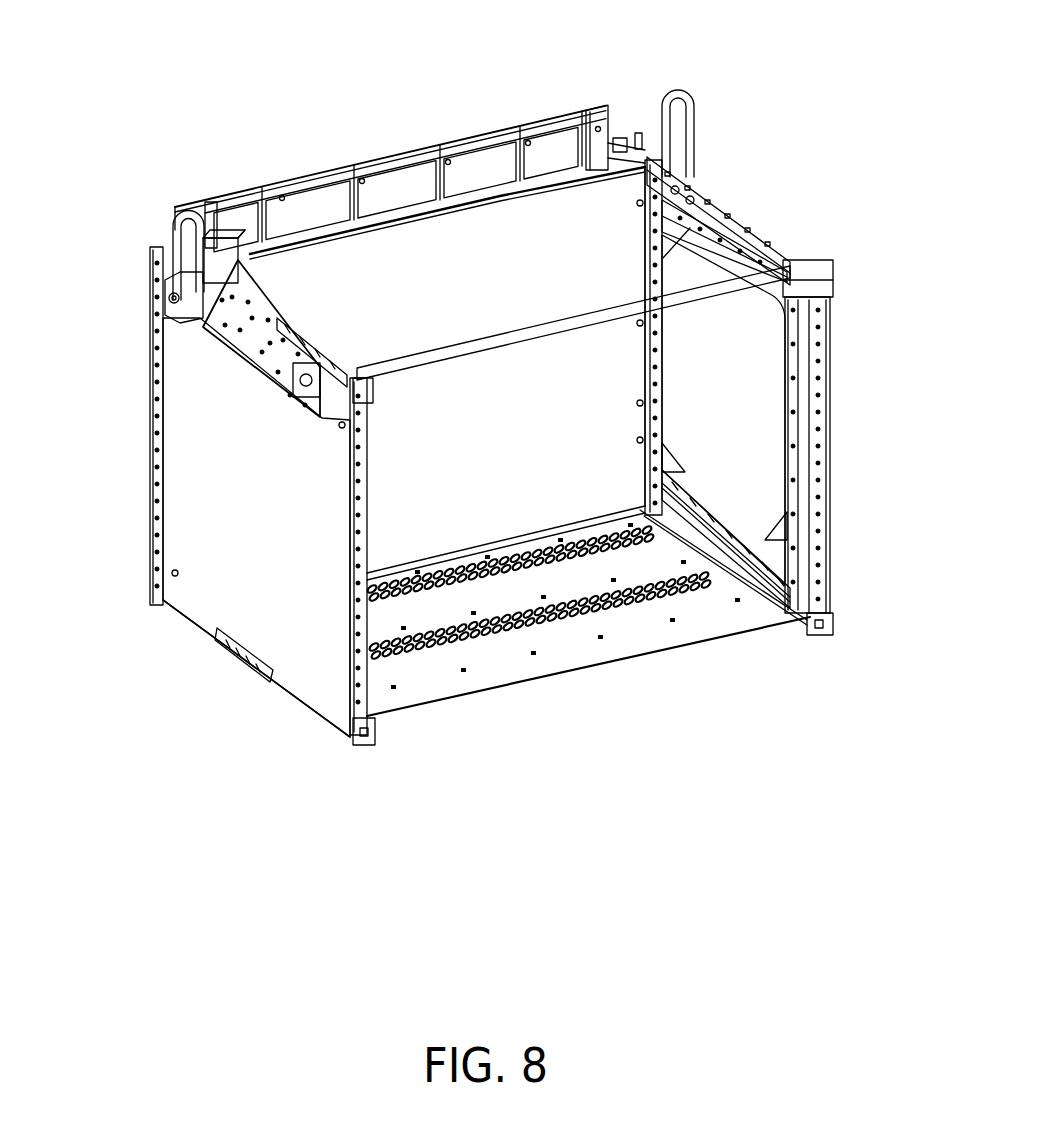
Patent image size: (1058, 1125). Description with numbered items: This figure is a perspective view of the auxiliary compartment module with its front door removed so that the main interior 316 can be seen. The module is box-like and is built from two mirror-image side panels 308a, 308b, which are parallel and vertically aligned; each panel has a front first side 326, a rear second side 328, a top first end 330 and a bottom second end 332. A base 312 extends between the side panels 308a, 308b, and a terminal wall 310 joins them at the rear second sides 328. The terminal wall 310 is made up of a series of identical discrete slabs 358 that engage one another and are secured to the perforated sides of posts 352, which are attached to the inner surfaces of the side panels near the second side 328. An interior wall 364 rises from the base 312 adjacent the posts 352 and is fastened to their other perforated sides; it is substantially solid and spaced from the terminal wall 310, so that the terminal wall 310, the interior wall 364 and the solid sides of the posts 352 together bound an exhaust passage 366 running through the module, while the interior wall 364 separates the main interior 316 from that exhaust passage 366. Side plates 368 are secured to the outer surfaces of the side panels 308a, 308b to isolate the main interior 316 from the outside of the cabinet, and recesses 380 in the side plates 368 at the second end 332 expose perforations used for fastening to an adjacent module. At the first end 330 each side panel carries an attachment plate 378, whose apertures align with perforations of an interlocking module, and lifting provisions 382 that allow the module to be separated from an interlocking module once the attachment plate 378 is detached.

The side panel 308a is at (131, 237).
The side panel 308b is at (845, 244).
The terminal wall 310 is at (310, 173).
The base 312 is at (515, 668).
The main interior 316 is at (523, 454).
The first side 326 is at (846, 579).
The second side 328 is at (134, 542).
The first end 330 is at (769, 215).
The second end 332 is at (798, 643).
The post 352 is at (222, 253).
The slab 358 is at (237, 337).
The interior wall 364 is at (432, 232).
The exhaust passage 366 is at (390, 193).
The side plate 368 is at (268, 537).
The attachment plate 378 is at (737, 192).
The recess 380 is at (253, 665).
The lifting provision 382 is at (190, 210).